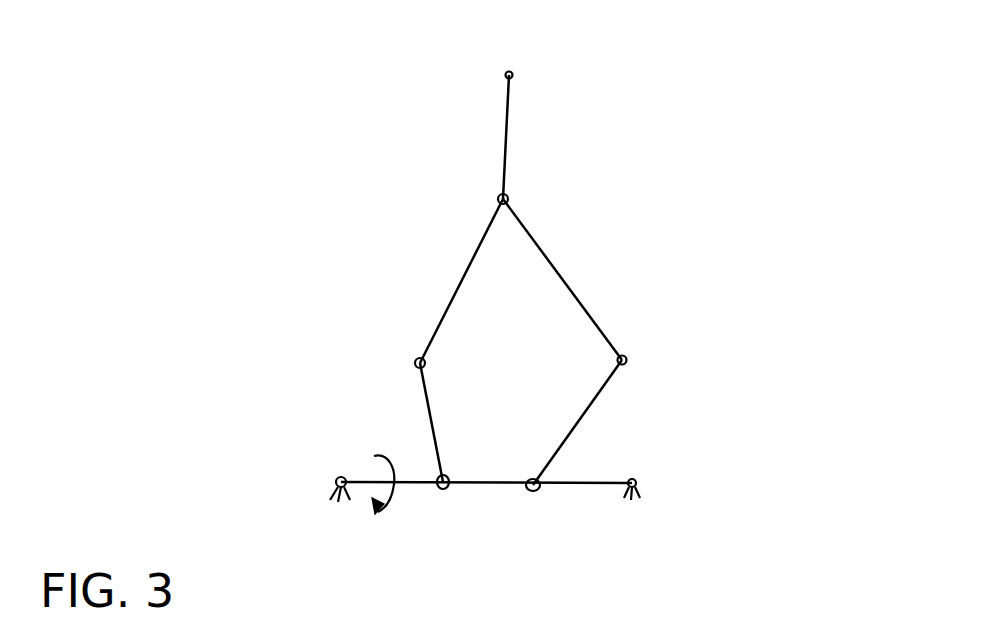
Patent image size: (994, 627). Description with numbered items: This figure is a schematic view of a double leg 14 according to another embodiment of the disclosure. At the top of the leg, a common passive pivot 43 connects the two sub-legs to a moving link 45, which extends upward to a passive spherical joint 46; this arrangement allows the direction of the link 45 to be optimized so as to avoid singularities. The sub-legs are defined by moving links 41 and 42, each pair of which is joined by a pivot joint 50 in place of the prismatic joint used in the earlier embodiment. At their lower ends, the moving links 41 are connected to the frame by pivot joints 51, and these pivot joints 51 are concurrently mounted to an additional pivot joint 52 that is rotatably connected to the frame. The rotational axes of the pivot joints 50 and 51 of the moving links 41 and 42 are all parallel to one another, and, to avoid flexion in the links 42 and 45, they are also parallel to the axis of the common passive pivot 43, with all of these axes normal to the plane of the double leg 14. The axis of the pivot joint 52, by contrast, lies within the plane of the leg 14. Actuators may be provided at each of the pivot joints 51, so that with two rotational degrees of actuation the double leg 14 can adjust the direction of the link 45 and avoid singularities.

The double leg 14 is at (718, 196).
The moving link 41 is at (427, 411).
The moving link 42 is at (452, 291).
The common passive pivot 43 is at (496, 198).
The moving link 45 is at (512, 125).
The passive spherical joint 46 is at (520, 71).
The pivot joint 50 is at (412, 358).
The pivot joint 51 is at (445, 492).
The pivot joint 52 is at (336, 477).